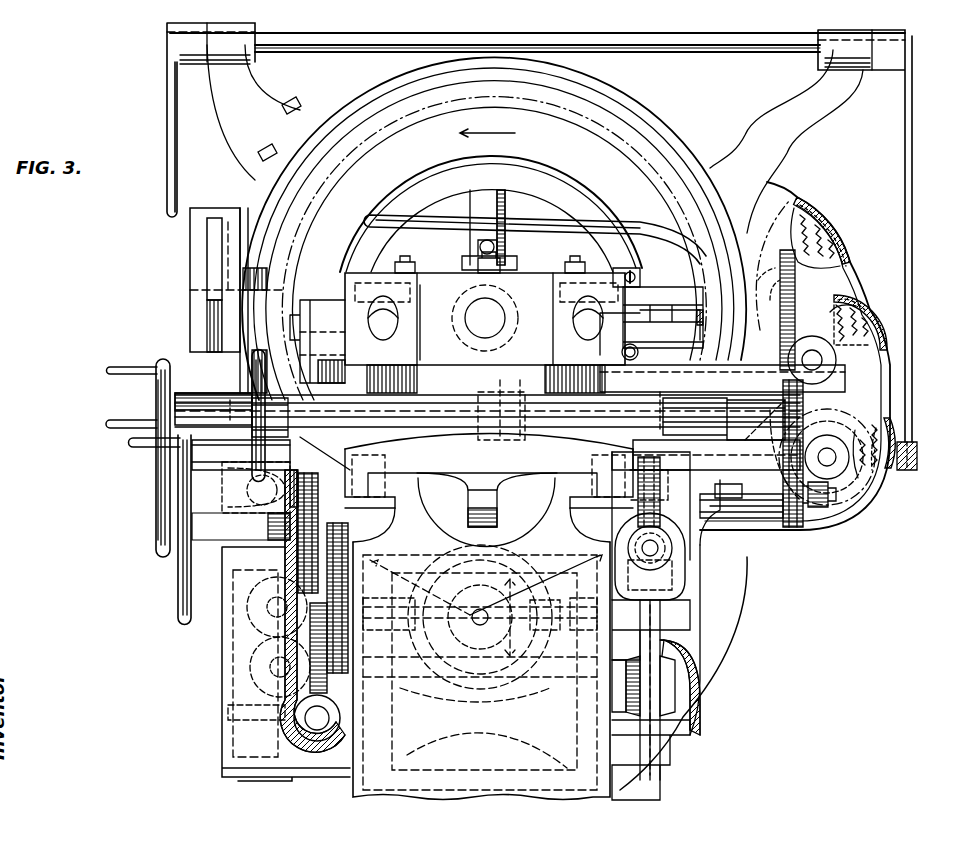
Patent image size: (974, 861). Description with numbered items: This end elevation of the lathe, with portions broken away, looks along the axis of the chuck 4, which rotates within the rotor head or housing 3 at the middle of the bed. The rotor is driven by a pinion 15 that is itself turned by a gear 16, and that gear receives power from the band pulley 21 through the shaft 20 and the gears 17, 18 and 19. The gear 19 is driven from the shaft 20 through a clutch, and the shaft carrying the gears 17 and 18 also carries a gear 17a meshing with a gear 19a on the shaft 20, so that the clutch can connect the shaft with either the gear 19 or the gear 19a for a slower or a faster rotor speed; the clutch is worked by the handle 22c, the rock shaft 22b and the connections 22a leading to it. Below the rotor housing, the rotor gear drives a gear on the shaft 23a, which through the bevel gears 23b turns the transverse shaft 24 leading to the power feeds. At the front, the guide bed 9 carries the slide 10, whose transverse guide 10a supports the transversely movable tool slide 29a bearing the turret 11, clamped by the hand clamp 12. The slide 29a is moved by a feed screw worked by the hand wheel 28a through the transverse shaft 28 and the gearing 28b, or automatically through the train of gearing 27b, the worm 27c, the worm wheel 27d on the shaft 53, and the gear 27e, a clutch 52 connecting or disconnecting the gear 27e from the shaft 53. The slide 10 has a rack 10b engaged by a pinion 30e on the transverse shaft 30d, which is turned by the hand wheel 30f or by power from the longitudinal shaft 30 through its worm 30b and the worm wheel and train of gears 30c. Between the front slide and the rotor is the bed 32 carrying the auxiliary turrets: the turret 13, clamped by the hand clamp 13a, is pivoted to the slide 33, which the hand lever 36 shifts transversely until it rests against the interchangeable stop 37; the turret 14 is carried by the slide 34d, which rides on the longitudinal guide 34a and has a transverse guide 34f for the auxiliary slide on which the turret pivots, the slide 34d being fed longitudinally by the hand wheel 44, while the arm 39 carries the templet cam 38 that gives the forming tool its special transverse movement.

The rotor head or housing 3 is at (494, 228).
The chuck 4 is at (491, 214).
The guide bed 9 is at (481, 662).
The slide 10 is at (489, 490).
The transverse guide 10a is at (664, 428).
The rack 10b is at (498, 500).
The turret 11 is at (485, 322).
The hand clamp 12 is at (497, 247).
The auxiliary turret 13 is at (648, 300).
The hand clamp 13a is at (645, 264).
The auxiliary turret 14 is at (322, 303).
The pinion 15 is at (840, 238).
The gear 16 is at (826, 224).
The gear 17 is at (882, 342).
The gear 17a is at (868, 318).
The gear 18 is at (852, 312).
The gear 19 is at (860, 482).
The gear 19a is at (884, 432).
The shaft 20 is at (827, 457).
The band pulley 21 is at (795, 363).
The connections 22a is at (905, 472).
The rock shaft 22b is at (537, 57).
The handle 22c is at (168, 215).
The shaft 23a is at (475, 618).
The bevel gears 23b is at (505, 640).
The transverse shaft 24 is at (548, 630).
The train of gearing 27b is at (660, 560).
The worm 27c is at (664, 556).
The worm wheel 27d is at (660, 478).
The gear 27e is at (796, 530).
The transverse shaft 28 is at (487, 410).
The hand wheel 28a is at (305, 470).
The gearing 28b is at (790, 452).
The tool slide 29a is at (500, 402).
The longitudinal shaft 30 is at (317, 718).
The worm 30b is at (330, 718).
The worm wheel and train of gears 30c is at (310, 640).
The transverse shaft 30d is at (241, 501).
The pinion 30e is at (480, 617).
The hand wheel 30f is at (178, 586).
The bed 32 is at (724, 413).
The slide 33 is at (722, 378).
The longitudinal guide 34a is at (241, 453).
The slide 34d is at (231, 415).
The transverse guide 34f is at (155, 387).
The hand lever 36 is at (402, 216).
The stop 37 is at (560, 352).
The templet cam 38 is at (272, 290).
The arm 39 is at (198, 253).
The hand wheel 44 is at (156, 492).
The clutch 52 is at (818, 508).
The shaft 53 is at (729, 488).